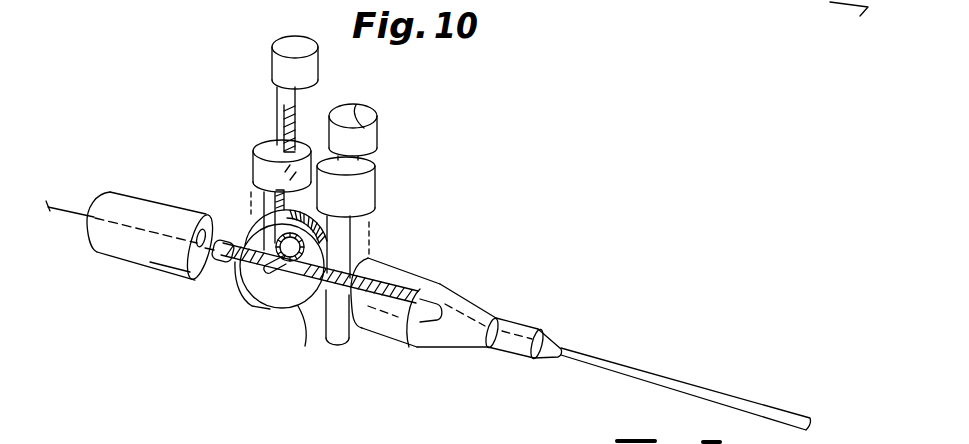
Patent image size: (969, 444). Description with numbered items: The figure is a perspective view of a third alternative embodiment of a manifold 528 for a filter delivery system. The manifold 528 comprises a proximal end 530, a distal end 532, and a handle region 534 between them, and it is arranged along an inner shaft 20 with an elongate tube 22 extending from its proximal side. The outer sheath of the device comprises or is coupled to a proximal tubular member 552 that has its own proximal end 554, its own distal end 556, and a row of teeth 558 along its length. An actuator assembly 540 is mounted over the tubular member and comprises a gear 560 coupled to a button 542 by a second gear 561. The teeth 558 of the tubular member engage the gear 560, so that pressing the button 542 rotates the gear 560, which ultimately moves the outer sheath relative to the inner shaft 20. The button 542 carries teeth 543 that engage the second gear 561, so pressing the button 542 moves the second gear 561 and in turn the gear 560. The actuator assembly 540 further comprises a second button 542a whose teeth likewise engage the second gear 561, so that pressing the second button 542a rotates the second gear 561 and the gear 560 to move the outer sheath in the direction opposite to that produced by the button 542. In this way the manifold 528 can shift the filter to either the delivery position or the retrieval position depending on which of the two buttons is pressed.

The inner shaft 20 is at (206, 253).
The guide tube 22 is at (74, 212).
The manifold 528 is at (136, 190).
The proximal end 530 is at (108, 238).
The distal end 532 is at (520, 325).
The handle region 534 is at (174, 262).
The actuator assembly 540 is at (246, 163).
The button 542 is at (275, 43).
The second button 542a is at (369, 110).
The teeth 543 is at (297, 110).
The proximal tubular member 552 is at (315, 313).
The proximal end 554 is at (231, 260).
The distal end 556 is at (408, 345).
The teeth 558 is at (356, 266).
The gear 560 is at (246, 219).
The second gear 561 is at (376, 217).